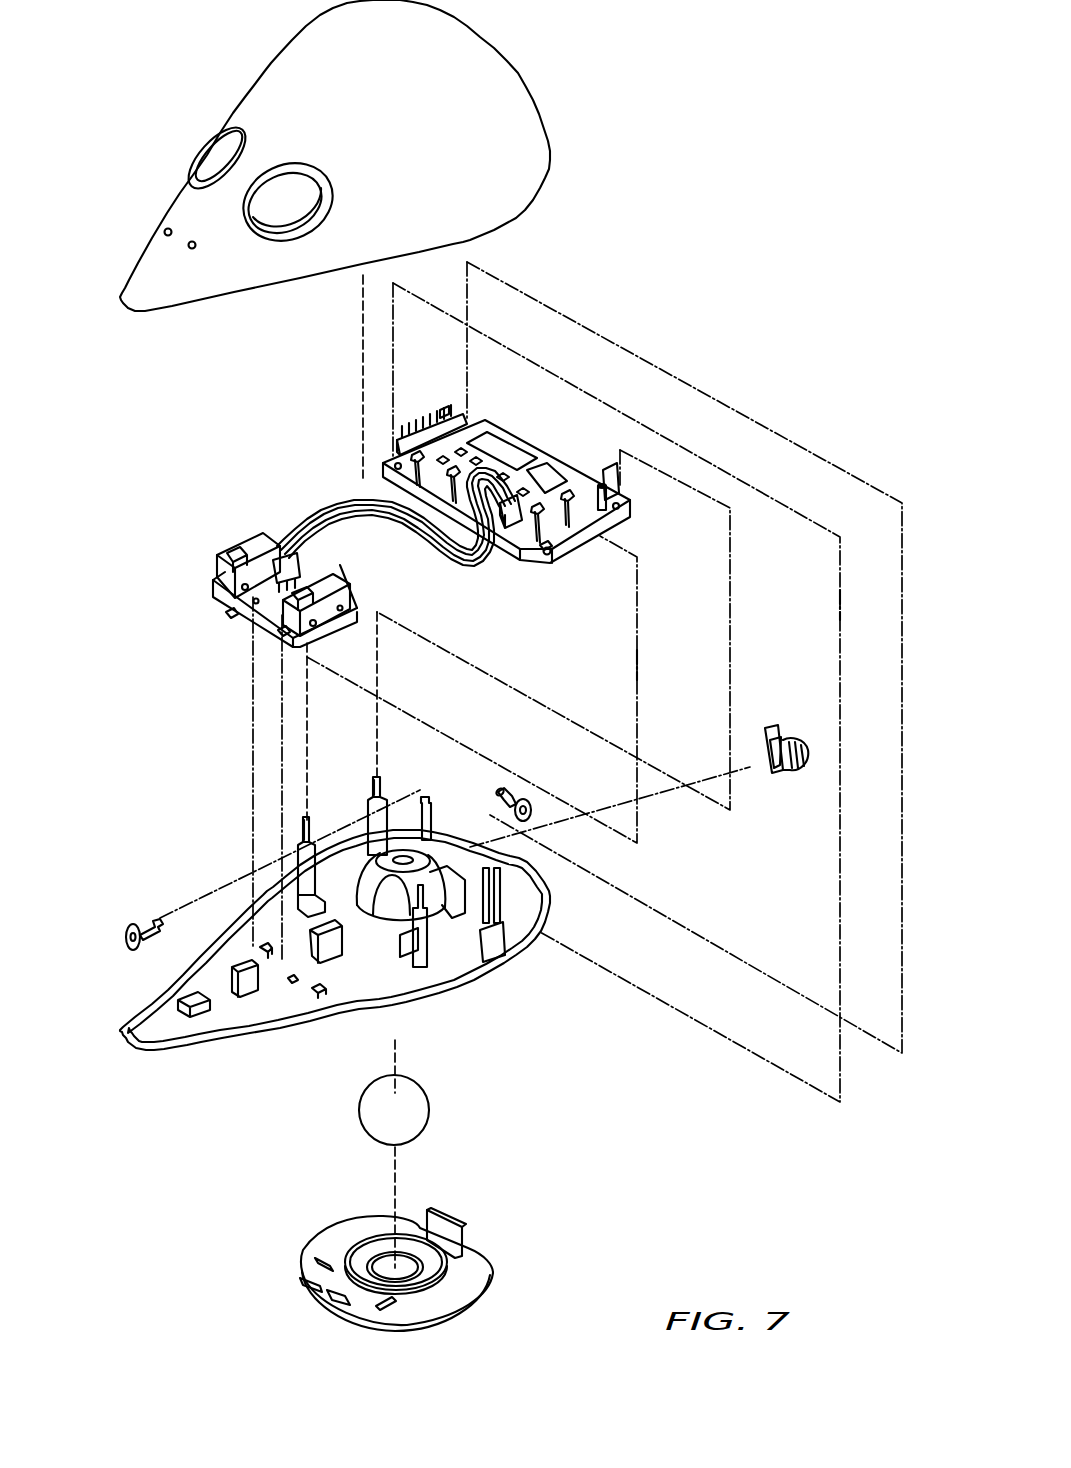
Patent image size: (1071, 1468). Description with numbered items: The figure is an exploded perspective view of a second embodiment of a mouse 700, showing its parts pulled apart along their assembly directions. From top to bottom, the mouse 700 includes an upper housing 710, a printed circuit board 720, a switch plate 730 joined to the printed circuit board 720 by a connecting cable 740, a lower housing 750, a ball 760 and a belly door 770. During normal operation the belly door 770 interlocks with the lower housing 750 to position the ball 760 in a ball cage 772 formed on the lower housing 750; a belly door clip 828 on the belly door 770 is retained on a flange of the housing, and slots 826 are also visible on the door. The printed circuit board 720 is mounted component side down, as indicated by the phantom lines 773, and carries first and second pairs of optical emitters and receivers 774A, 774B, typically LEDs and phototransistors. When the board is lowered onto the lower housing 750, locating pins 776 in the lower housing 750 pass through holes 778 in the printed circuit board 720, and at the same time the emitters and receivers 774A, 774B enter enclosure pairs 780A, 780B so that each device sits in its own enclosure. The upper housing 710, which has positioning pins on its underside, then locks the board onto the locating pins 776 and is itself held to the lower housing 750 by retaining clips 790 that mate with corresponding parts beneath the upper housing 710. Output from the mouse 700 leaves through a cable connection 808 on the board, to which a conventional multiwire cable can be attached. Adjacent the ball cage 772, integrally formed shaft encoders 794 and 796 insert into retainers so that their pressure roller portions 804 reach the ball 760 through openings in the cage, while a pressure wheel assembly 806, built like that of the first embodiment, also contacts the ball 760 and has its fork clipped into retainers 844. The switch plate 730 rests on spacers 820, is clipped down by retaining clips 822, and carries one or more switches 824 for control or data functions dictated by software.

The mouse 700 is at (672, 311).
The upper housing 710 is at (500, 77).
The printed circuit board 720 is at (495, 440).
The switch plate 730 is at (223, 605).
The connecting cable 740 is at (367, 530).
The lower housing 750 is at (203, 1040).
The ball 760 is at (415, 1108).
The belly door 770 is at (480, 1278).
The ball cage 772 is at (480, 935).
The phantom lines 773 is at (840, 605).
The first pair of optical emitters and receivers 774A is at (567, 530).
The second pair of optical emitters and receivers 774B is at (415, 462).
The locating pins 776 is at (373, 790).
The holes 778 is at (630, 515).
The enclosure 780A is at (313, 892).
The enclosure 780B is at (395, 950).
The retaining clips 790 is at (421, 780).
The shaft encoder 794 is at (131, 924).
The shaft encoder 796 is at (517, 790).
The pressure roller portion 804 is at (160, 920).
The pressure wheel assembly 806 is at (770, 780).
The cable connection 808 is at (422, 432).
The spacers 820 is at (268, 955).
The retaining clips 822 is at (245, 997).
The switches 824 is at (283, 633).
The slot 826 is at (303, 1280).
The belly door clip 828 is at (463, 1238).
The retainers 844 is at (500, 787).